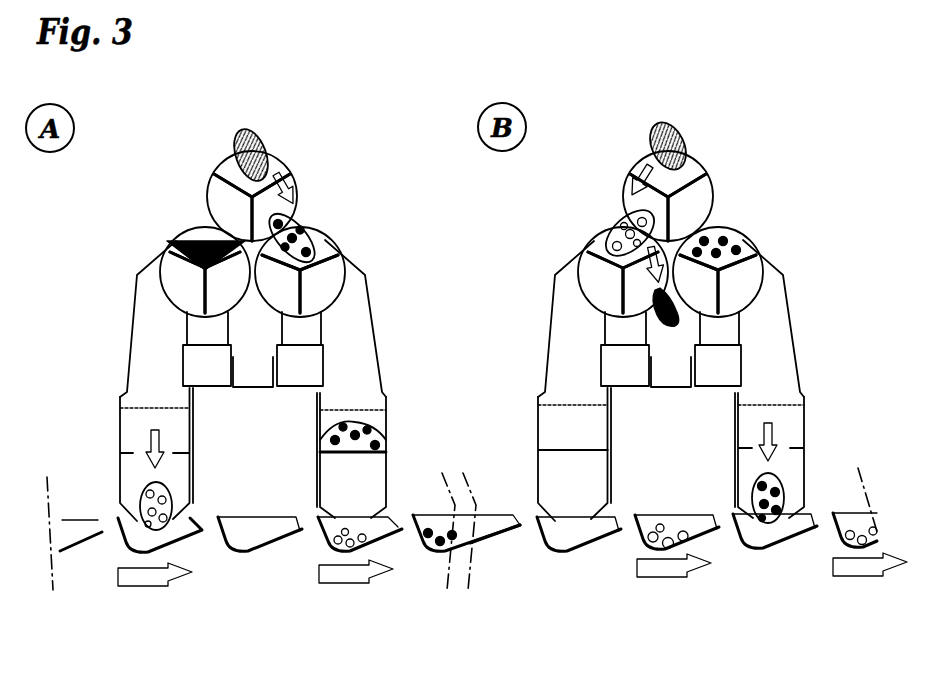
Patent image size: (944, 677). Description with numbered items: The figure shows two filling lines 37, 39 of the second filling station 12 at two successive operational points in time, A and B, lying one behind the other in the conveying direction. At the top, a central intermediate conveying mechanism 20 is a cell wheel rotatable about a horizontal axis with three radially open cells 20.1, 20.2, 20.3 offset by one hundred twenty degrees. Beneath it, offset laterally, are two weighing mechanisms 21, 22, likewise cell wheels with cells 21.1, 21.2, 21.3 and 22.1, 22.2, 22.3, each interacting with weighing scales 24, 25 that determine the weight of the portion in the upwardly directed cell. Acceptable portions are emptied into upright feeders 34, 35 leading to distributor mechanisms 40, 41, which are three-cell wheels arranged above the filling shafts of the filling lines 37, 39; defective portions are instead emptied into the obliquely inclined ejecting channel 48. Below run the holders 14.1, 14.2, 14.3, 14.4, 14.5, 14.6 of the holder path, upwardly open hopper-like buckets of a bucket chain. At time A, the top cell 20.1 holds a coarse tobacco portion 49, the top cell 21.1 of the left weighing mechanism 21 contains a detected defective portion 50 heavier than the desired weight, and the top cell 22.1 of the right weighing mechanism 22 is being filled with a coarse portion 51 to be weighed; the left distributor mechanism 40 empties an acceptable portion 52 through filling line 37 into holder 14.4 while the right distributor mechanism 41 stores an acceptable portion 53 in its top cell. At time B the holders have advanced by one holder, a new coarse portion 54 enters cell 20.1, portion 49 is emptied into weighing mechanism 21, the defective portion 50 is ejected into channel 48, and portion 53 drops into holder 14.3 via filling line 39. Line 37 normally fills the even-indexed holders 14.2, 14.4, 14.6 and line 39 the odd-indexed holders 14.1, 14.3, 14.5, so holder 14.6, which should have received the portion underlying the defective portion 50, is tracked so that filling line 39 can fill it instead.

The second filling station 12 is at (372, 128).
The intermediate conveying mechanism 20 is at (290, 152).
The cell of the intermediate conveying mechanism 20.1 is at (230, 172).
The cell of the intermediate conveying mechanism 20.2 is at (222, 192).
The cell of the intermediate conveying mechanism 20.3 is at (295, 182).
The weighing mechanism 21 is at (137, 275).
The cell of the weighing mechanism 21.1 is at (203, 230).
The cell of the weighing mechanism 21.2 is at (173, 284).
The cell of the weighing mechanism 21.3 is at (187, 321).
The weighing mechanism 22 is at (345, 280).
The cell of the weighing mechanism 22.1 is at (320, 243).
The cell of the weighing mechanism 22.2 is at (327, 325).
The cell of the weighing mechanism 22.3 is at (320, 290).
The weighing scales 24 is at (213, 387).
The weighing scales 25 is at (297, 387).
The feeder 34 is at (143, 366).
The feeder 35 is at (350, 370).
The filling line 37 is at (138, 472).
The filling line 39 is at (353, 493).
The distributor mechanism 40 is at (120, 450).
The distributor mechanism 41 is at (388, 452).
The ejecting channel 48 is at (247, 387).
The coarse tobacco portion 49 is at (252, 128).
The defective portion 50 is at (172, 240).
The coarse portion 51 is at (310, 224).
The acceptable portion 52 is at (150, 500).
The acceptable portion 53 is at (370, 425).
The coarse portion 54 is at (678, 127).
The holder 14.1 is at (427, 550).
The holder 14.2 is at (377, 523).
The holder 14.3 is at (260, 505).
The holder 14.4 is at (185, 532).
The holder 14.5 is at (82, 540).
The holder 14.6 is at (493, 532).